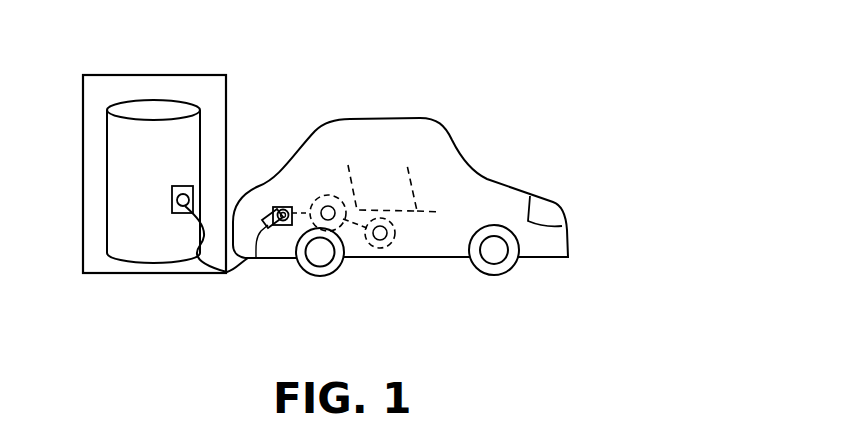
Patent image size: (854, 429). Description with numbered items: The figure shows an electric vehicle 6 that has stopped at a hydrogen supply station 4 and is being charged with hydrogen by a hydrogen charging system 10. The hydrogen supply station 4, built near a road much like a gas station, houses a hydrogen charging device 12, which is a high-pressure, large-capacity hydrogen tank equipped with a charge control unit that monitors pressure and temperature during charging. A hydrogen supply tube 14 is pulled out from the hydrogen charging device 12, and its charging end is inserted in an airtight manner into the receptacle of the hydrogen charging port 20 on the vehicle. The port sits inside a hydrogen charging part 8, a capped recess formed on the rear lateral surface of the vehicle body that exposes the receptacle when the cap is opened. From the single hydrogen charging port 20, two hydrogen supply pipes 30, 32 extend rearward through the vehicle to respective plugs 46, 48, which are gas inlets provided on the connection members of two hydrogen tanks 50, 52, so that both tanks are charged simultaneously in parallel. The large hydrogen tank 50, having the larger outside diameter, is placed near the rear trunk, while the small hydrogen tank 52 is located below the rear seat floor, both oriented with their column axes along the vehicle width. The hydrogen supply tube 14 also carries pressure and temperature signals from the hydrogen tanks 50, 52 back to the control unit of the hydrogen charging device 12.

The hydrogen supply station 4 is at (127, 202).
The electric vehicle 6 is at (437, 155).
The hydrogen charging part 8 is at (268, 212).
The hydrogen charging system 10 is at (400, 149).
The hydrogen charging device 12 is at (150, 249).
The hydrogen supply tube 14 is at (242, 267).
The hydrogen charging port 20 is at (277, 224).
The hydrogen supply pipe 30 is at (285, 226).
The hydrogen supply pipe 32 is at (357, 220).
The plug 46 is at (323, 200).
The plug 48 is at (395, 238).
The hydrogen tank 50 is at (340, 197).
The hydrogen tank 52 is at (395, 232).